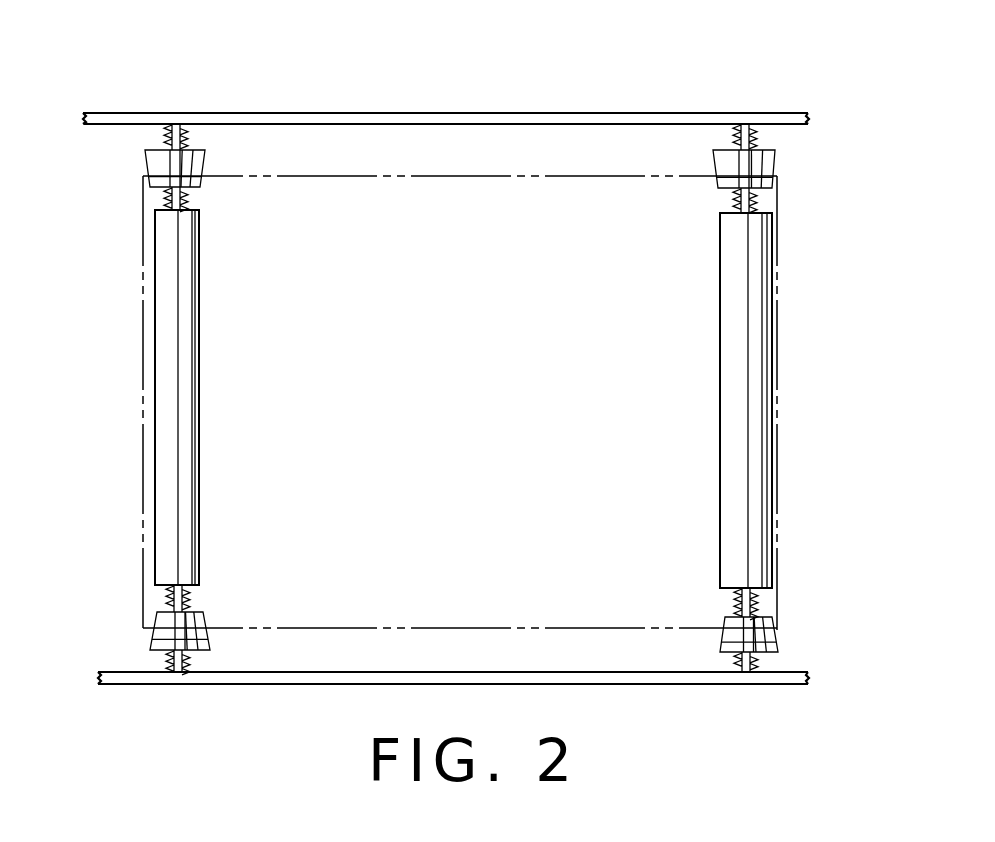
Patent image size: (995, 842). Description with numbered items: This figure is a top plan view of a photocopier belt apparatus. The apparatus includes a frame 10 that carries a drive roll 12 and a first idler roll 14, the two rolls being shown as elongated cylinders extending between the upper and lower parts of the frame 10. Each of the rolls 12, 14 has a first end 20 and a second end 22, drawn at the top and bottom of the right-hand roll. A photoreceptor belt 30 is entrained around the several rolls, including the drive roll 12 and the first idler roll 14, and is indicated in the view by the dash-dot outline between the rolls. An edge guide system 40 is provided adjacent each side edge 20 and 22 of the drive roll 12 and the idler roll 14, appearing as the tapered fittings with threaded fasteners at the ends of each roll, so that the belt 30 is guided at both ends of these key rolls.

The frame 10 is at (327, 113).
The drive roll 12 is at (758, 410).
The first idler roll 14 is at (168, 383).
The first end 20 is at (760, 207).
The second end 22 is at (760, 590).
The photoreceptor belt 30 is at (465, 176).
The edge guide system 40 is at (128, 139).